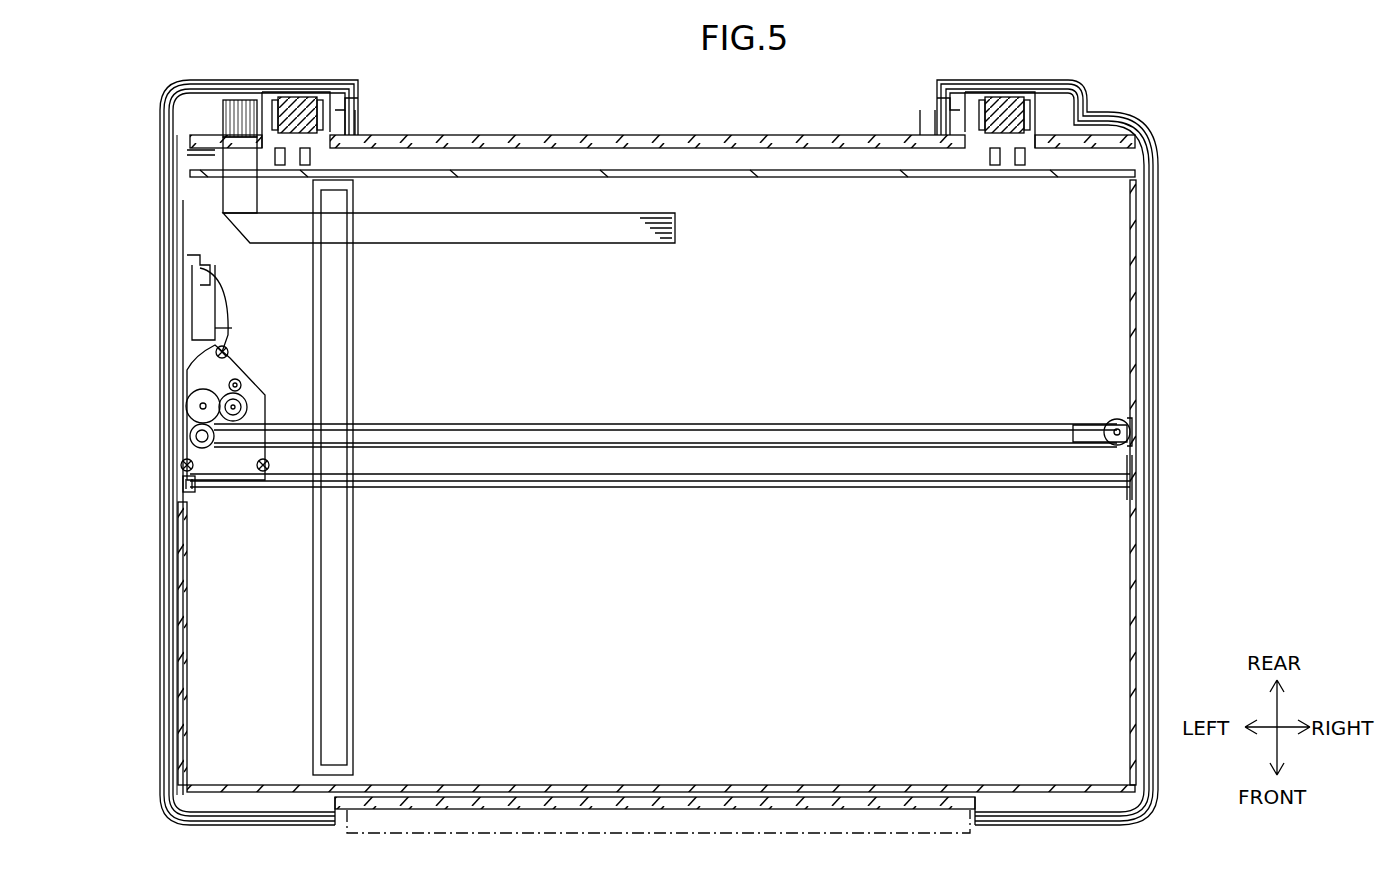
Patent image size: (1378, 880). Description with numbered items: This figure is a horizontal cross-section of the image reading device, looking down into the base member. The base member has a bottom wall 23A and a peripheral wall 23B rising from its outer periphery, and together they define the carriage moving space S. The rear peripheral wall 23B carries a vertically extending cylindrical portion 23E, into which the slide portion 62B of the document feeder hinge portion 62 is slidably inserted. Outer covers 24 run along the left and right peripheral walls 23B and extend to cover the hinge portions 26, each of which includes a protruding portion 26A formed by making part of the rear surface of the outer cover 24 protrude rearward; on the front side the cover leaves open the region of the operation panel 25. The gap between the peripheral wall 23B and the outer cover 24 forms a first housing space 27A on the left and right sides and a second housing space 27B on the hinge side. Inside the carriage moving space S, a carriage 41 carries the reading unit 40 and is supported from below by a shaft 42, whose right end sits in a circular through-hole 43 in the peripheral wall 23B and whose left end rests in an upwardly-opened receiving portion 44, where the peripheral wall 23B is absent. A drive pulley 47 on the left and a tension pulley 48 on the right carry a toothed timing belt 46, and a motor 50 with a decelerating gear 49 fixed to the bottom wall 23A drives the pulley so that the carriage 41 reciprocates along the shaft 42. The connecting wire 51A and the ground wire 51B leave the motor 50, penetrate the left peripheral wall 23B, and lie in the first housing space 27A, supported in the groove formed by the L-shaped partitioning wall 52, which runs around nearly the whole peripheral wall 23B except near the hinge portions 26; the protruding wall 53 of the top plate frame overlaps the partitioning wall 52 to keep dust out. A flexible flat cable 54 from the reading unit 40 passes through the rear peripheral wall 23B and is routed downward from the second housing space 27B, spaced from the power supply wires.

The outer cover 24 is at (175, 85).
The operation panel 25 is at (365, 833).
The hinge portion 26 is at (369, 118).
The protruding portion 26A is at (185, 155).
The first housing space 27A is at (183, 262).
The second housing space 27B is at (175, 122).
The bottom wall 23A is at (586, 633).
The peripheral wall 23B is at (795, 178).
The cylindrical portion 23E is at (330, 100).
The reading unit 40 is at (345, 315).
The carriage 41 is at (355, 345).
The shaft 42 is at (752, 488).
The through-hole 43 is at (1127, 492).
The receiving portion 44 is at (195, 492).
The toothed timing belt 46 is at (740, 422).
The drive pulley 47 is at (190, 436).
The tension pulley 48 is at (1112, 420).
The decelerating gear 49 is at (190, 398).
The motor 50 is at (255, 375).
The connecting wire 51A is at (200, 252).
The ground wire 51B is at (225, 300).
The partitioning wall 52 is at (705, 178).
The protruding wall 53 is at (625, 136).
The flexible flat cable 54 is at (440, 243).
The hinge portion 62 is at (640, 122).
The slide portion 62B is at (317, 112).
The carriage moving space S is at (818, 648).